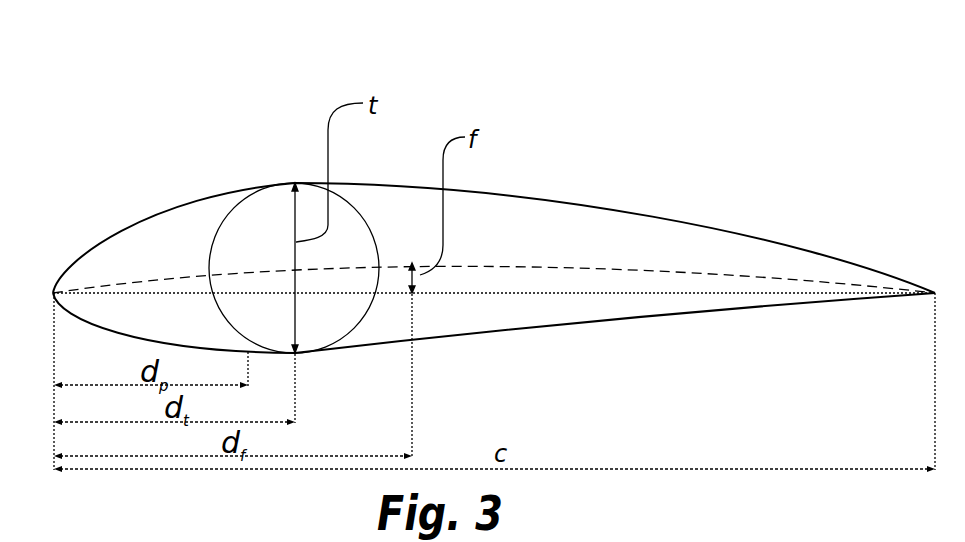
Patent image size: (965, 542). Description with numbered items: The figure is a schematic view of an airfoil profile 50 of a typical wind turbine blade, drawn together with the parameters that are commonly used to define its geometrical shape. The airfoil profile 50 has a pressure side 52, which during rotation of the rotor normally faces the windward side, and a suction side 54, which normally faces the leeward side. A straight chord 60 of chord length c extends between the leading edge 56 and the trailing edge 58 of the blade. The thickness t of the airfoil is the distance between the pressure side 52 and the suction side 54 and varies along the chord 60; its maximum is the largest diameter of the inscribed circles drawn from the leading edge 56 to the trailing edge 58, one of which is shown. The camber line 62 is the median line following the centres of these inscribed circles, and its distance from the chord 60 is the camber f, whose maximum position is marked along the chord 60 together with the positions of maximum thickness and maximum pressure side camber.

The airfoil profile 50 is at (476, 211).
The pressure side 52 is at (668, 322).
The suction side 54 is at (603, 203).
The leading edge 56 is at (53, 292).
The trailing edge 58 is at (935, 292).
The chord 60 is at (712, 293).
The camber line 62 is at (484, 262).